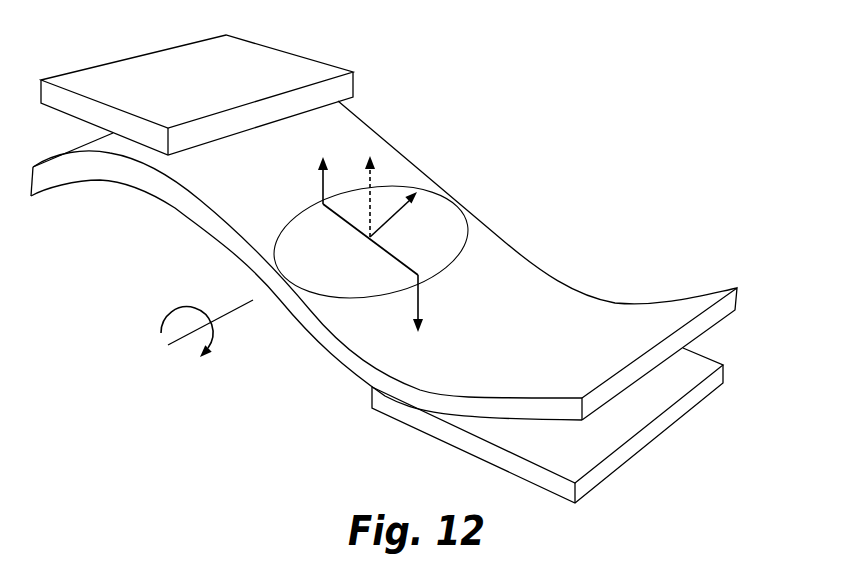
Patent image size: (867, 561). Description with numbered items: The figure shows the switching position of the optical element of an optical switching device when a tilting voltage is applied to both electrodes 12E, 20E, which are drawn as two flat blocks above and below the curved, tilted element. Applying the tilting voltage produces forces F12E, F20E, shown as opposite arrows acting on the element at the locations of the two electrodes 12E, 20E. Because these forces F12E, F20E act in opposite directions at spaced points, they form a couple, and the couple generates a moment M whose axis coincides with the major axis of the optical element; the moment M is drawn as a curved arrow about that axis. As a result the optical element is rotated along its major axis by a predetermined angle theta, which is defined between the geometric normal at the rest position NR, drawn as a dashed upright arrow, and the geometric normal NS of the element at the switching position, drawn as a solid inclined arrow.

The electrode 12E is at (259, 68).
The electrode 20E is at (667, 423).
The force F12E is at (288, 183).
The force F20E is at (457, 315).
The geometric normal at rest position NR is at (395, 187).
The geometric normal at switching position NS is at (417, 213).
The moment M is at (202, 333).